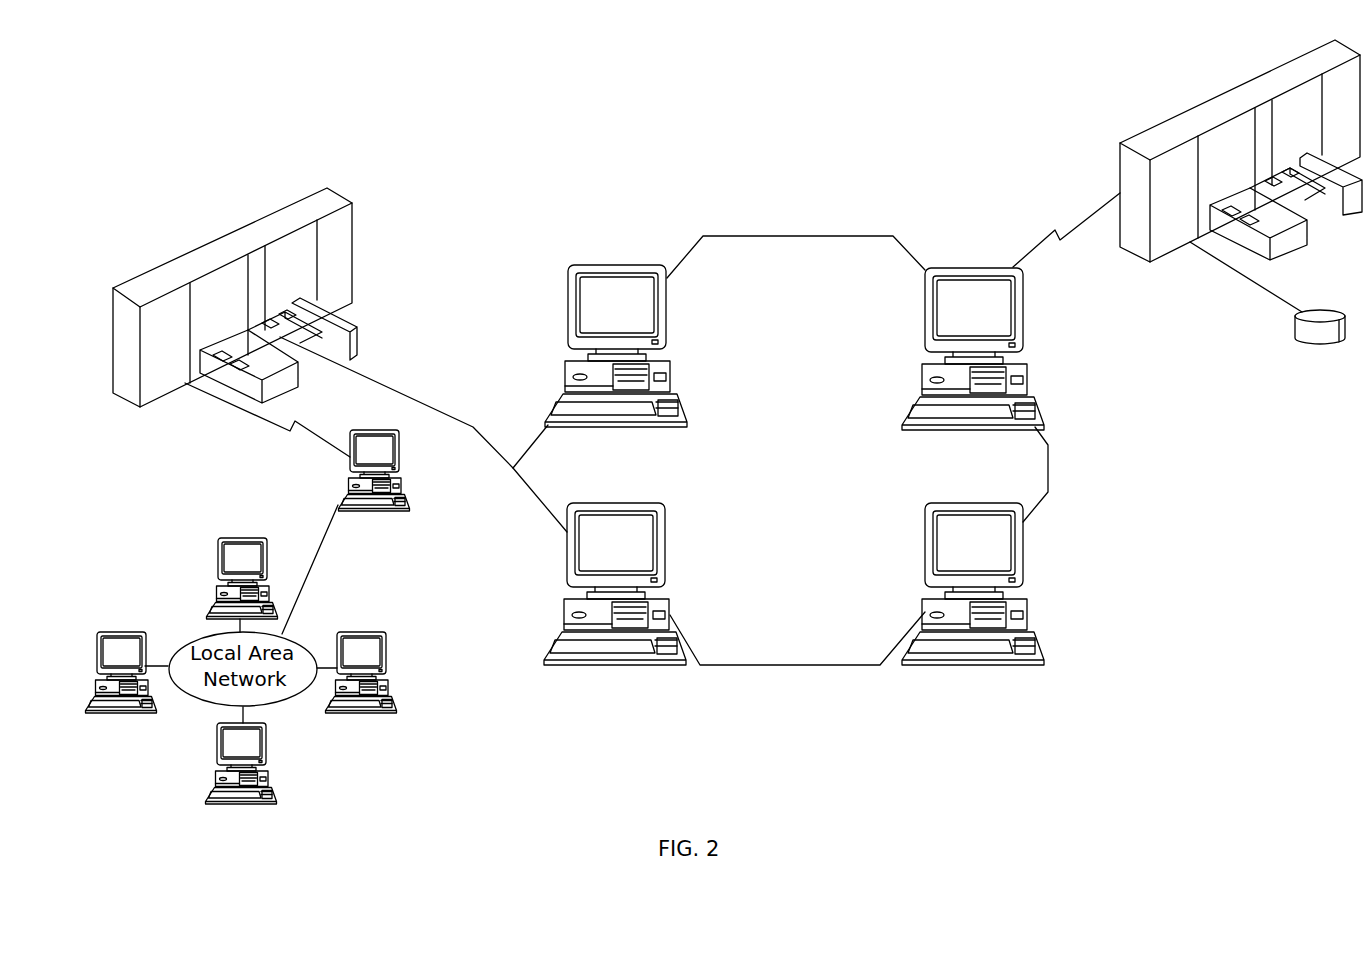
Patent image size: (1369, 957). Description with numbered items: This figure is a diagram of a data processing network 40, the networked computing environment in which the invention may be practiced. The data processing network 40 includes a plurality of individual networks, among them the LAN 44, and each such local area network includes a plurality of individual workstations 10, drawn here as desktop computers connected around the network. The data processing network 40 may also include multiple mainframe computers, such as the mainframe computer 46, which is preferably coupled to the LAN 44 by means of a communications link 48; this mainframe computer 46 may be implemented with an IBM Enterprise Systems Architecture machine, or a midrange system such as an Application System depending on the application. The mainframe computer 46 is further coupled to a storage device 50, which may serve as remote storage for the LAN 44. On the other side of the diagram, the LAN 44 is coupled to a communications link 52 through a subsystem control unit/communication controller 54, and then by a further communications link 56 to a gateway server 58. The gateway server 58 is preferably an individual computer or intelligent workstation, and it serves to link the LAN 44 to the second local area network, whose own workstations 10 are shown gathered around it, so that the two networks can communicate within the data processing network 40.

The individual workstation 10 is at (618, 266).
The data processing network 40 is at (848, 215).
The LAN 44 is at (780, 450).
The mainframe computer 46 is at (1195, 106).
The communications link 48 is at (1093, 206).
The storage device 50 is at (1327, 312).
The communications link 52 is at (392, 389).
The subsystem control unit/communication controller 54 is at (232, 228).
The communications link 56 is at (240, 413).
The gateway server 58 is at (397, 452).